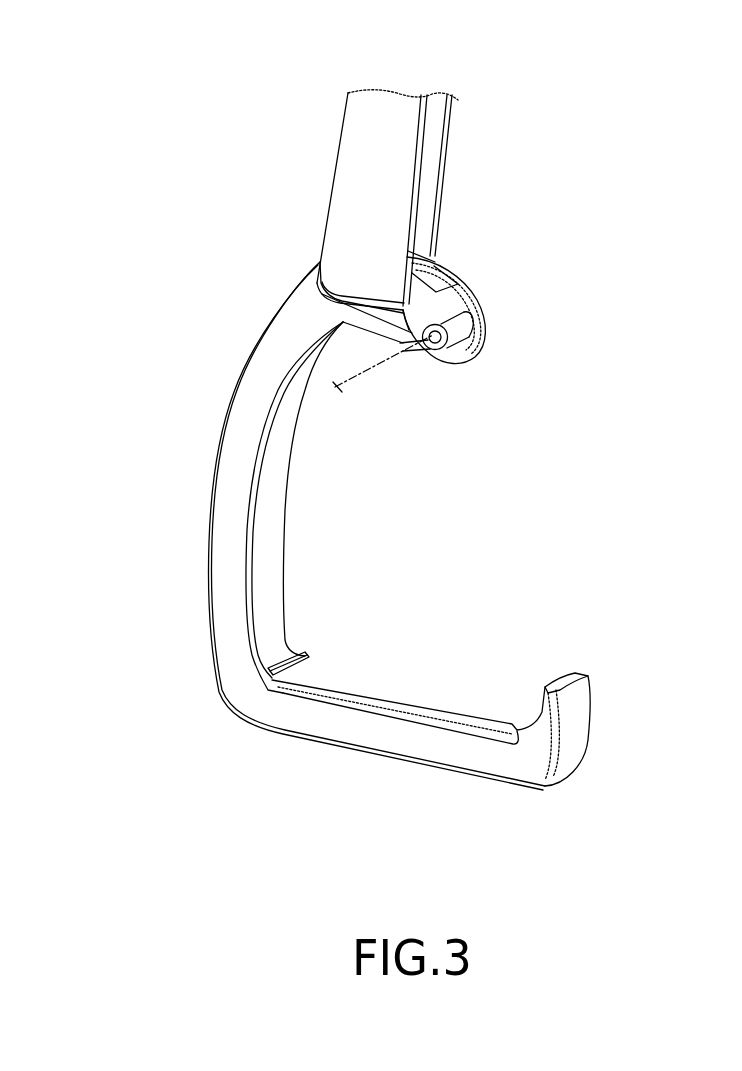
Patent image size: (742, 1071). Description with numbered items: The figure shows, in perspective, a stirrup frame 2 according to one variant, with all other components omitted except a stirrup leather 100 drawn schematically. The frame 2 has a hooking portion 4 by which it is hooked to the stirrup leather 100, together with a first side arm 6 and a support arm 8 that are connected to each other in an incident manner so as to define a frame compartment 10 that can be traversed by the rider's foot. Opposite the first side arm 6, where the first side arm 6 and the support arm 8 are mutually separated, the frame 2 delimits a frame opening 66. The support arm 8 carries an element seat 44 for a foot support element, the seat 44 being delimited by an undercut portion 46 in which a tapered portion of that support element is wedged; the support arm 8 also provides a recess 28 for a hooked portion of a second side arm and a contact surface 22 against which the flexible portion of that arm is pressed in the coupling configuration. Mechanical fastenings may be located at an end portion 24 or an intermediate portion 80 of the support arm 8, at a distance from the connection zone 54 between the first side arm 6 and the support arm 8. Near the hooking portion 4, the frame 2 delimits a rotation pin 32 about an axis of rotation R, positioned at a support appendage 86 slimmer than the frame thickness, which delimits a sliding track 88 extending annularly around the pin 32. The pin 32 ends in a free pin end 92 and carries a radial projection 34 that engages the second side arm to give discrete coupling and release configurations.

The stirrup frame 2 is at (612, 316).
The hooking portion 4 is at (382, 283).
The first side arm 6 is at (212, 497).
The support arm 8 is at (309, 743).
The frame compartment 10 is at (358, 518).
The contact surface 22 is at (588, 678).
The end portion 24 is at (597, 710).
The recess 28 is at (557, 670).
The rotation pin 32 is at (436, 354).
The radial projection 34 is at (470, 332).
The element seat 44 is at (407, 706).
The undercut portion 46 is at (300, 672).
The connection zone 54 is at (234, 699).
The frame opening 66 is at (447, 497).
The intermediate portion 80 is at (378, 775).
The support appendage 86 is at (478, 306).
The sliding track 88 is at (465, 350).
The free pin end 92 is at (415, 333).
The stirrup leather 100 is at (343, 118).
The axis of rotation R is at (348, 390).